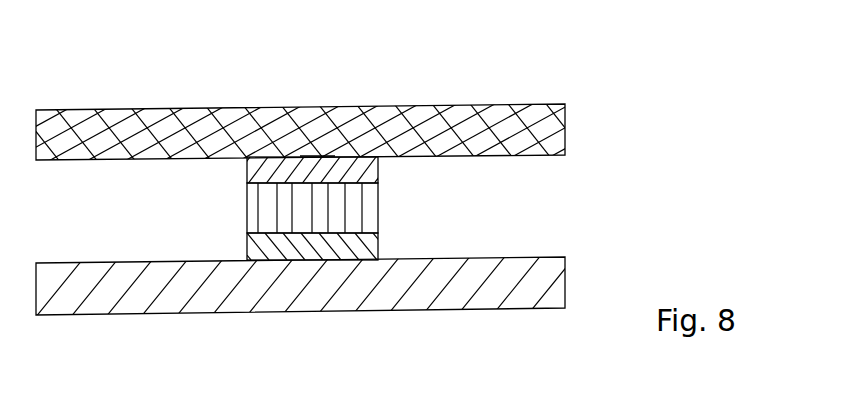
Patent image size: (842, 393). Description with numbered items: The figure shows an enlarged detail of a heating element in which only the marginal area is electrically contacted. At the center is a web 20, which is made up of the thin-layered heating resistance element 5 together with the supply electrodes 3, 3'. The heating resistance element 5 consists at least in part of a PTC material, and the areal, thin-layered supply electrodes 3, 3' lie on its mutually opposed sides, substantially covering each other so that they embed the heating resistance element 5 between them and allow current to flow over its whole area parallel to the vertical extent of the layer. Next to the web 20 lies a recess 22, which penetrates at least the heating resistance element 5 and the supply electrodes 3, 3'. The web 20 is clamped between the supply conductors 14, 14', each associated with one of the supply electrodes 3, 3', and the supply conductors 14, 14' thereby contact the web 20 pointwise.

The supply conductor 14 is at (327, 91).
The supply conductor 14' is at (306, 268).
The web 20 is at (317, 152).
The recess 22 is at (503, 180).
The supply electrode 3 is at (345, 174).
The heating resistance element 5 is at (363, 208).
The supply electrode 3' is at (347, 245).